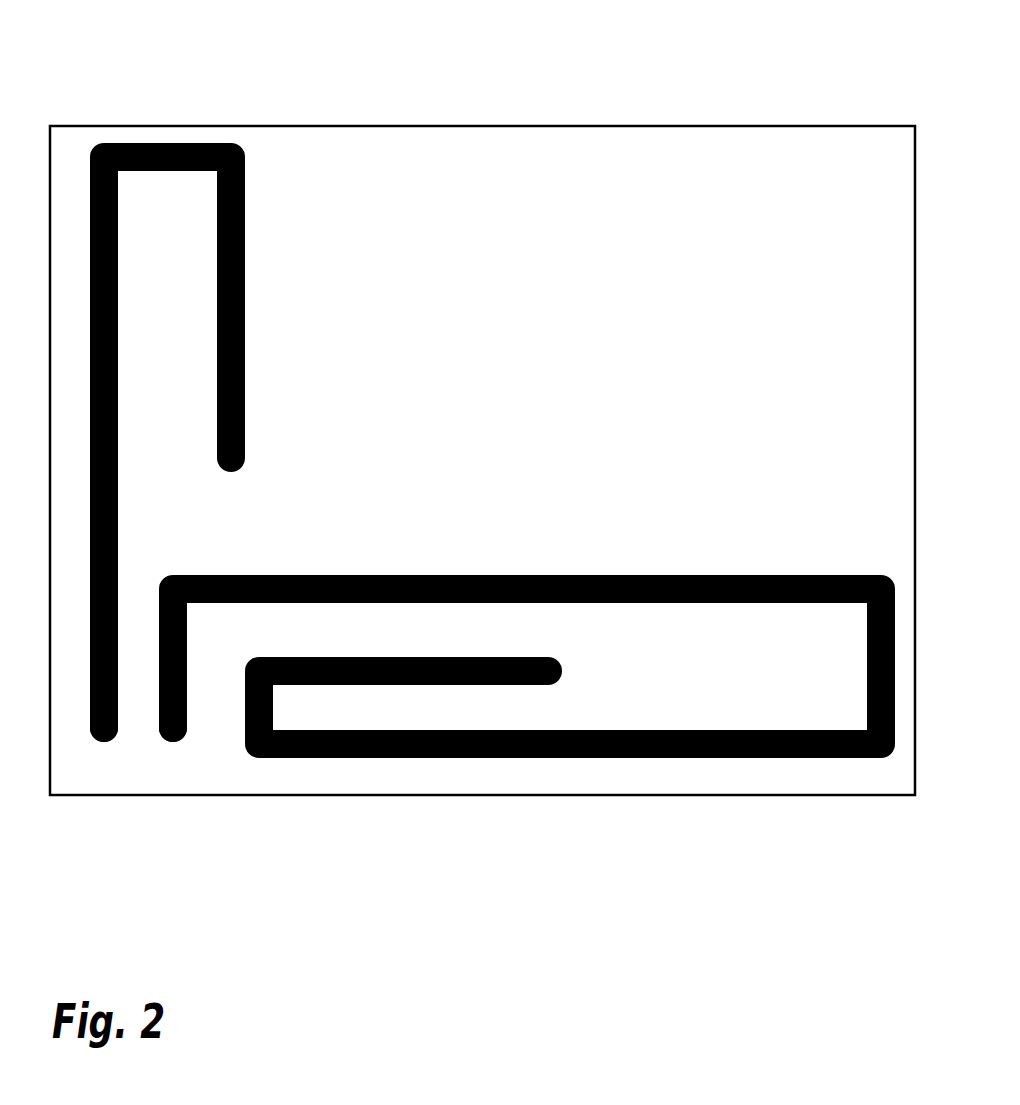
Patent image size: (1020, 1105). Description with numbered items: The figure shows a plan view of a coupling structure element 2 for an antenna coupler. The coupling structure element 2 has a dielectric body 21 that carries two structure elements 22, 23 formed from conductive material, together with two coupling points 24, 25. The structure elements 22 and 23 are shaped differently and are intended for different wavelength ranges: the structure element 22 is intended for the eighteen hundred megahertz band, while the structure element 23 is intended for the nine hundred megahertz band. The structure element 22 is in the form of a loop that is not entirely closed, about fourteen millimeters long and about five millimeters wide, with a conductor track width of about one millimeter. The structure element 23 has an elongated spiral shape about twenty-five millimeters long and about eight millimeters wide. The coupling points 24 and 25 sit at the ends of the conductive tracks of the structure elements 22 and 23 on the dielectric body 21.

The coupling structure element 2 is at (576, 120).
The dielectric body 21 is at (430, 158).
The structure element 22 is at (170, 143).
The structure element 23 is at (552, 758).
The coupling point 24 is at (100, 745).
The coupling point 25 is at (166, 745).